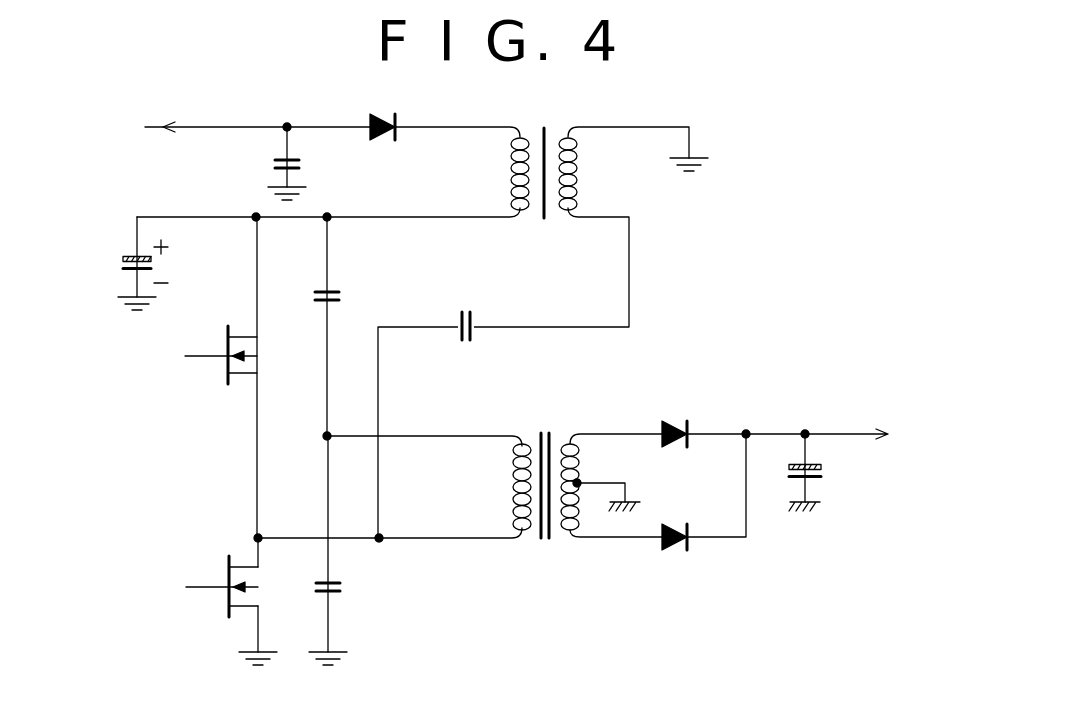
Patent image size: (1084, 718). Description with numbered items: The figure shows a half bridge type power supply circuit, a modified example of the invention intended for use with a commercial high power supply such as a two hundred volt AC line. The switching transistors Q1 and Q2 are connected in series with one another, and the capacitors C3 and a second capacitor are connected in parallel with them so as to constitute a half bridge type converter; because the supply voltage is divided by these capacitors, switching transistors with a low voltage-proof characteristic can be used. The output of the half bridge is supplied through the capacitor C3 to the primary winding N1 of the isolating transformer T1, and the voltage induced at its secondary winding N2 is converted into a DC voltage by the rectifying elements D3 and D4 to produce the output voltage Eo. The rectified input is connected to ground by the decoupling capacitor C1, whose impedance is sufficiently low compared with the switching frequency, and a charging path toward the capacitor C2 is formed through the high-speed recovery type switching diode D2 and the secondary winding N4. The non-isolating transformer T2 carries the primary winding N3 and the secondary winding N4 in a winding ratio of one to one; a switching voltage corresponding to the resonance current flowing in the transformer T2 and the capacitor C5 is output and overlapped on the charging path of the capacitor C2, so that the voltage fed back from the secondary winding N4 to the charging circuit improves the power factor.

The decoupling capacitor C1 is at (303, 161).
The capacitor C2 is at (126, 263).
The capacitor C3 is at (346, 326).
The capacitor C5 is at (470, 311).
The high-speed recovery type switching diode D2 is at (387, 113).
The rectifying element D3 is at (675, 418).
The rectifying element D4 is at (678, 557).
The switching transistor Q1 is at (242, 377).
The switching transistor Q2 is at (244, 601).
The isolating transformer T1 is at (544, 468).
The non-isolating transformer T2 is at (545, 157).
The primary winding N1 is at (501, 487).
The secondary winding N2 is at (590, 487).
The primary winding N3 is at (587, 174).
The secondary winding N4 is at (500, 174).
The output voltage Eo is at (839, 435).